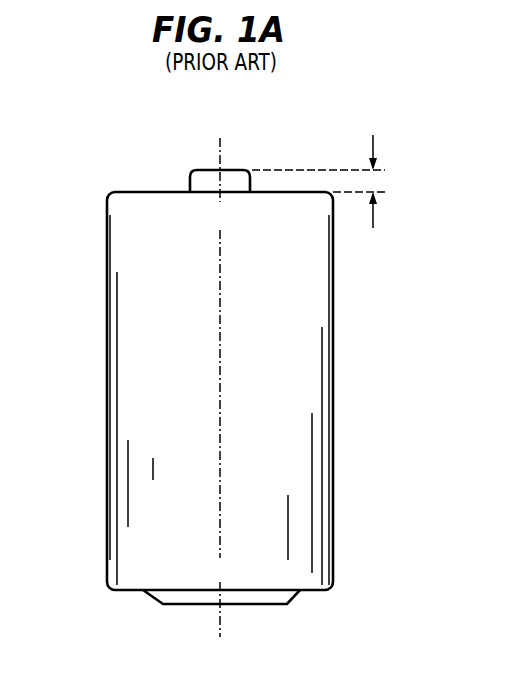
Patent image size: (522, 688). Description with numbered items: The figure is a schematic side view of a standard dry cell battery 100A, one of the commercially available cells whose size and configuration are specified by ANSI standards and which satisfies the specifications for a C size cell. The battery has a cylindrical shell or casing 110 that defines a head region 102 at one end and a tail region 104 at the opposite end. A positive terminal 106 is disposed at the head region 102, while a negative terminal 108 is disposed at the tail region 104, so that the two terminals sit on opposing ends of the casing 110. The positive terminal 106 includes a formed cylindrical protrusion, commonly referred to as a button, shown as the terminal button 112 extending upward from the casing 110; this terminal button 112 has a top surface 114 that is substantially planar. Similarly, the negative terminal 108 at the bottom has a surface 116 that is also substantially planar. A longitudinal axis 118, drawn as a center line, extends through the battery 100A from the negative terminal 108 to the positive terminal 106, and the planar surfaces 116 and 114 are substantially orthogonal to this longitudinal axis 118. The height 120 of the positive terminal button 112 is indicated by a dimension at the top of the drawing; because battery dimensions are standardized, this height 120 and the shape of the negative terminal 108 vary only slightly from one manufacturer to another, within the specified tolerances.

The dry cell battery 100A is at (329, 124).
The head region 102 is at (90, 221).
The tail region 104 is at (82, 563).
The positive terminal 106 is at (277, 192).
The negative terminal 108 is at (293, 598).
The casing 110 is at (106, 381).
The terminal button 112 is at (190, 181).
The top surface 114 is at (229, 170).
The surface 116 is at (180, 605).
The longitudinal axis 118 is at (220, 398).
The height 120 is at (375, 145).